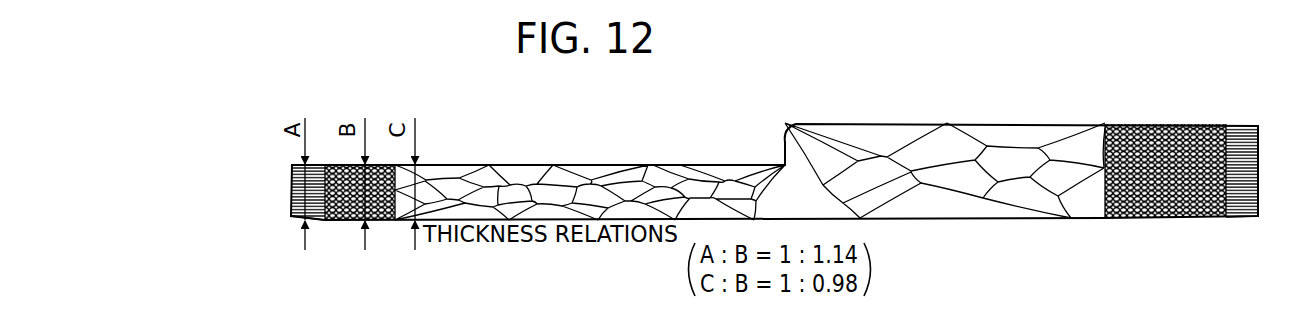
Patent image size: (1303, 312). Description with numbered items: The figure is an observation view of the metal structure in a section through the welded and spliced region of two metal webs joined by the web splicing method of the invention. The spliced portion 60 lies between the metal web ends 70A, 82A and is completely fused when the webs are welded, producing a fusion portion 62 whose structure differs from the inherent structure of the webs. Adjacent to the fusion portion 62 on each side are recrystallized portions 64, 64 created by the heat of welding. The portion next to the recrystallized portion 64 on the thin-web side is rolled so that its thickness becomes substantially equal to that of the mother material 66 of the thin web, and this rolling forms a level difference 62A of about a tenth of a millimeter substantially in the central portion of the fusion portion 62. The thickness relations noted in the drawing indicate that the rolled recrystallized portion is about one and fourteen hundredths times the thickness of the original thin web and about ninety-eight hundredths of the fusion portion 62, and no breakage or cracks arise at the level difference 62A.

The spliced portion 60 is at (471, 121).
The fusion portion 62 is at (659, 163).
The level difference 62A is at (784, 124).
The recrystallized portion 64 is at (382, 224).
The mother material 66 is at (312, 224).
The metal web end 70A is at (297, 164).
The metal web end 82A is at (1227, 124).